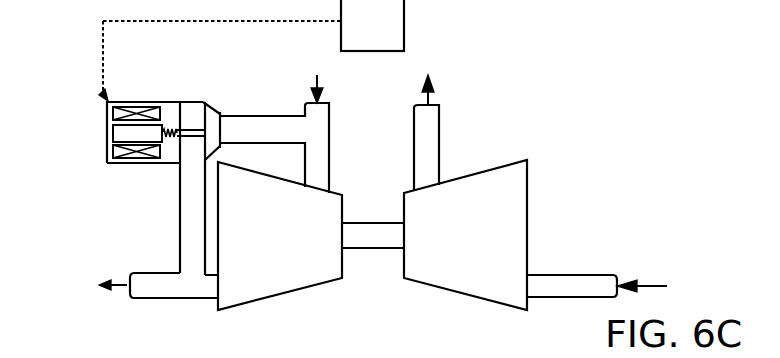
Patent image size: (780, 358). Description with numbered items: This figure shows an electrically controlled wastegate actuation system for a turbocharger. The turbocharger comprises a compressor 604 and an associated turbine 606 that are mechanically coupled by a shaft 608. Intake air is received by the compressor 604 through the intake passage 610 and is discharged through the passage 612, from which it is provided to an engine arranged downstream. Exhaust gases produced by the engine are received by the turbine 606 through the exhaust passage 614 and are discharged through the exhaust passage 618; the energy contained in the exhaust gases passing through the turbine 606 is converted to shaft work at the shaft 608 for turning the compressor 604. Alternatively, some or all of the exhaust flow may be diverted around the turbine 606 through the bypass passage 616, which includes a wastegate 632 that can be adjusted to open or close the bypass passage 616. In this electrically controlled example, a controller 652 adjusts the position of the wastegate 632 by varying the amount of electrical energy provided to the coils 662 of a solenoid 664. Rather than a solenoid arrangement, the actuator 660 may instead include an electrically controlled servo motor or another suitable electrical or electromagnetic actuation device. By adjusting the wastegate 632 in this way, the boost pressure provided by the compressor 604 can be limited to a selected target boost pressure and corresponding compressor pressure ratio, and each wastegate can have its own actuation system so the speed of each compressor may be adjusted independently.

The compressor 604 is at (460, 297).
The turbine 606 is at (282, 296).
The shaft 608 is at (372, 222).
The intake passage 610 is at (556, 300).
The passage 612 is at (414, 140).
The exhaust passage 614 is at (303, 155).
The bypass passage 616 is at (180, 240).
The exhaust passage 618 is at (158, 300).
The wastegate 632 is at (218, 116).
The controller 652 is at (386, 30).
The actuator 660 is at (131, 165).
The coils 662 is at (112, 151).
The solenoid 664 is at (160, 128).